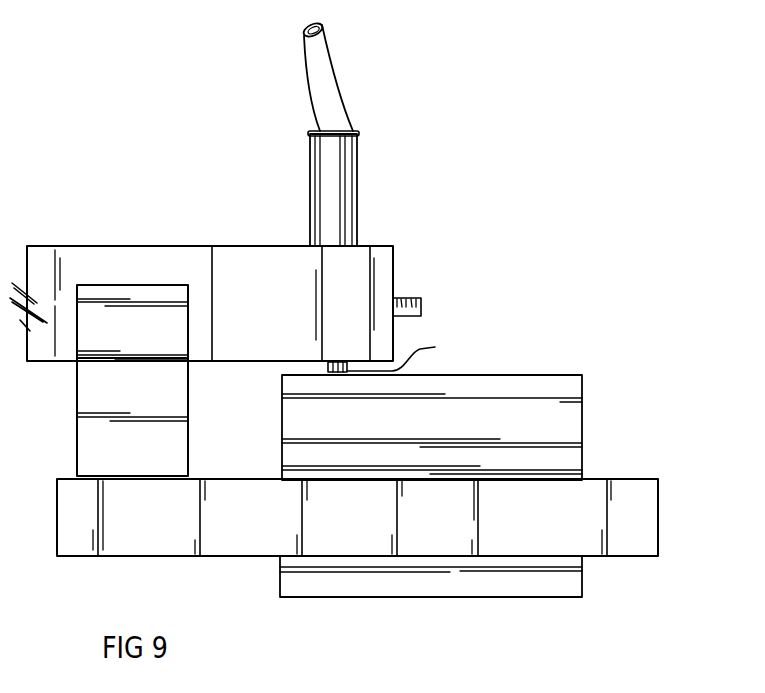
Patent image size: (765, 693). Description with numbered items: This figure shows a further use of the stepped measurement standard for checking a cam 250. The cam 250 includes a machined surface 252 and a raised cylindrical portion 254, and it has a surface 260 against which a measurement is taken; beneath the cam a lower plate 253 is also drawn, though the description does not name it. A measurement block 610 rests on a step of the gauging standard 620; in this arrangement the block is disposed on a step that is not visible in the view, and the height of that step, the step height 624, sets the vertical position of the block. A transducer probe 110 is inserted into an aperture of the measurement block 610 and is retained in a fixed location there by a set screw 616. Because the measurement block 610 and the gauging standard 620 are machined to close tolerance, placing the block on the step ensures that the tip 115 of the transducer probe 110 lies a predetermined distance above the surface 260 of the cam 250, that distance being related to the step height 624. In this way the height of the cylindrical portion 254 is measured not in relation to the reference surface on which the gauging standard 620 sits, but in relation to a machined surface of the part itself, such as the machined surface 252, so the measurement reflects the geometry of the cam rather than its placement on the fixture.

The transducer probe 110 is at (333, 168).
The measurement block 610 is at (201, 303).
The set screw 616 is at (408, 297).
The tip 115 is at (403, 353).
The raised cylindrical portion 254 is at (547, 392).
The cam 250 is at (631, 412).
The gauging standard 620 is at (132, 380).
The step height 624 is at (42, 362).
The surface 260 is at (253, 444).
The machined surface 252 is at (357, 517).
The bottom plate 253 is at (535, 589).